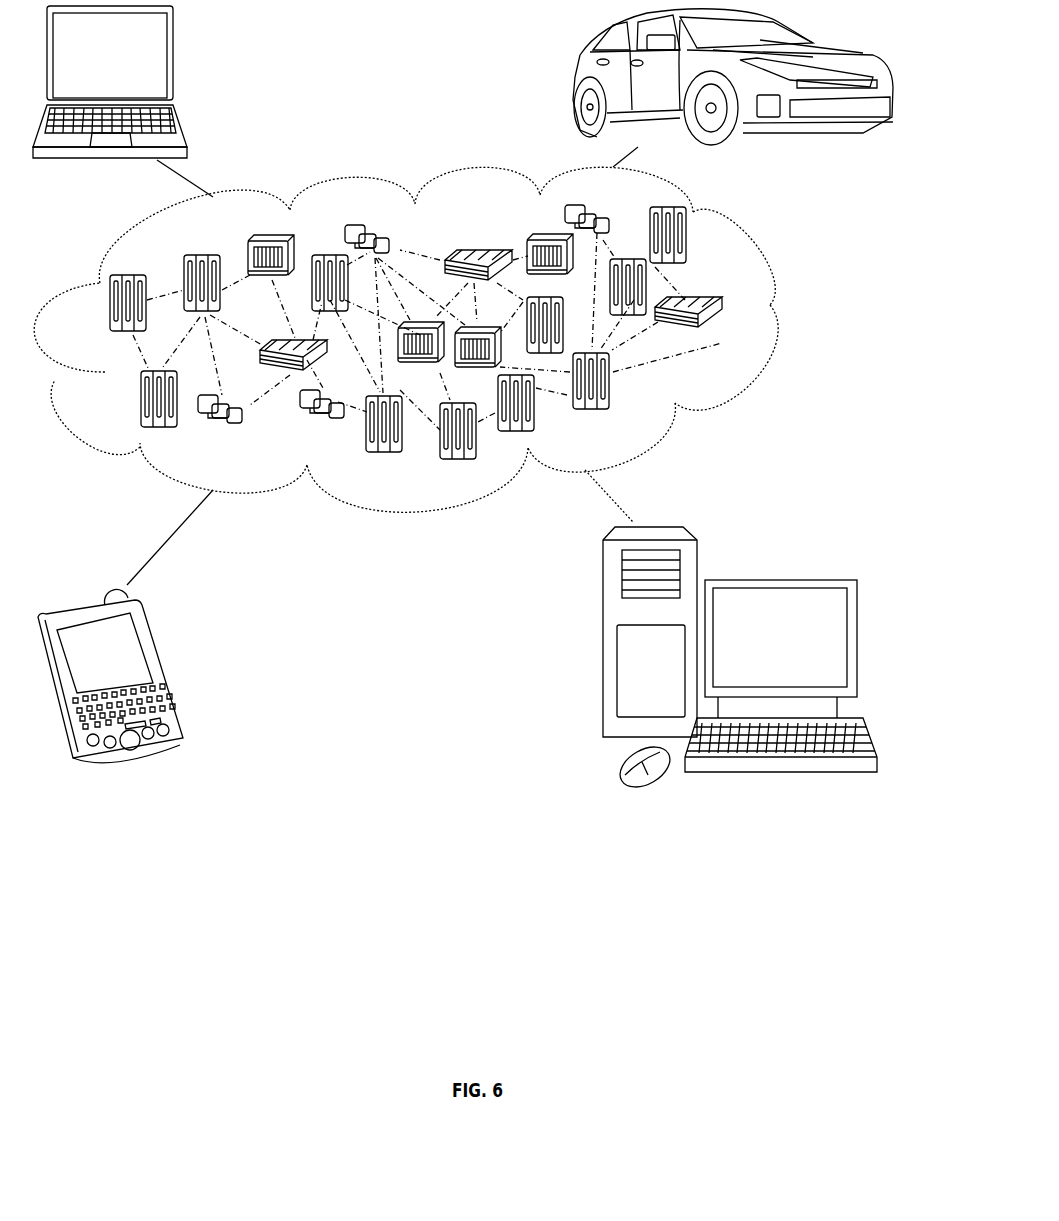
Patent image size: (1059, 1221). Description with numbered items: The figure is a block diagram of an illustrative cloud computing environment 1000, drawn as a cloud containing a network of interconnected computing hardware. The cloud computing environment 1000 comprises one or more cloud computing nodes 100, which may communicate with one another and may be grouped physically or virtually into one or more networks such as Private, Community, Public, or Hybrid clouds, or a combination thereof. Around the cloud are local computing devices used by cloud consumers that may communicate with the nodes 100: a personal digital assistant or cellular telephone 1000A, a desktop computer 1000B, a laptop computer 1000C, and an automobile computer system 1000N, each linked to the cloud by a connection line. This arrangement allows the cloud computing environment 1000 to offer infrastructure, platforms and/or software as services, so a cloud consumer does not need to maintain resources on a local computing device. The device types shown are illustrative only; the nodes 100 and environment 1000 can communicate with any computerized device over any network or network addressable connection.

The cloud computing environment 1000 is at (780, 313).
The cloud computing nodes 100 is at (722, 343).
The personal digital assistant (PDA) or cellular telephone 1000A is at (167, 667).
The desktop computer 1000B is at (775, 580).
The laptop computer 1000C is at (175, 63).
The automobile computer system 1000N is at (573, 76).